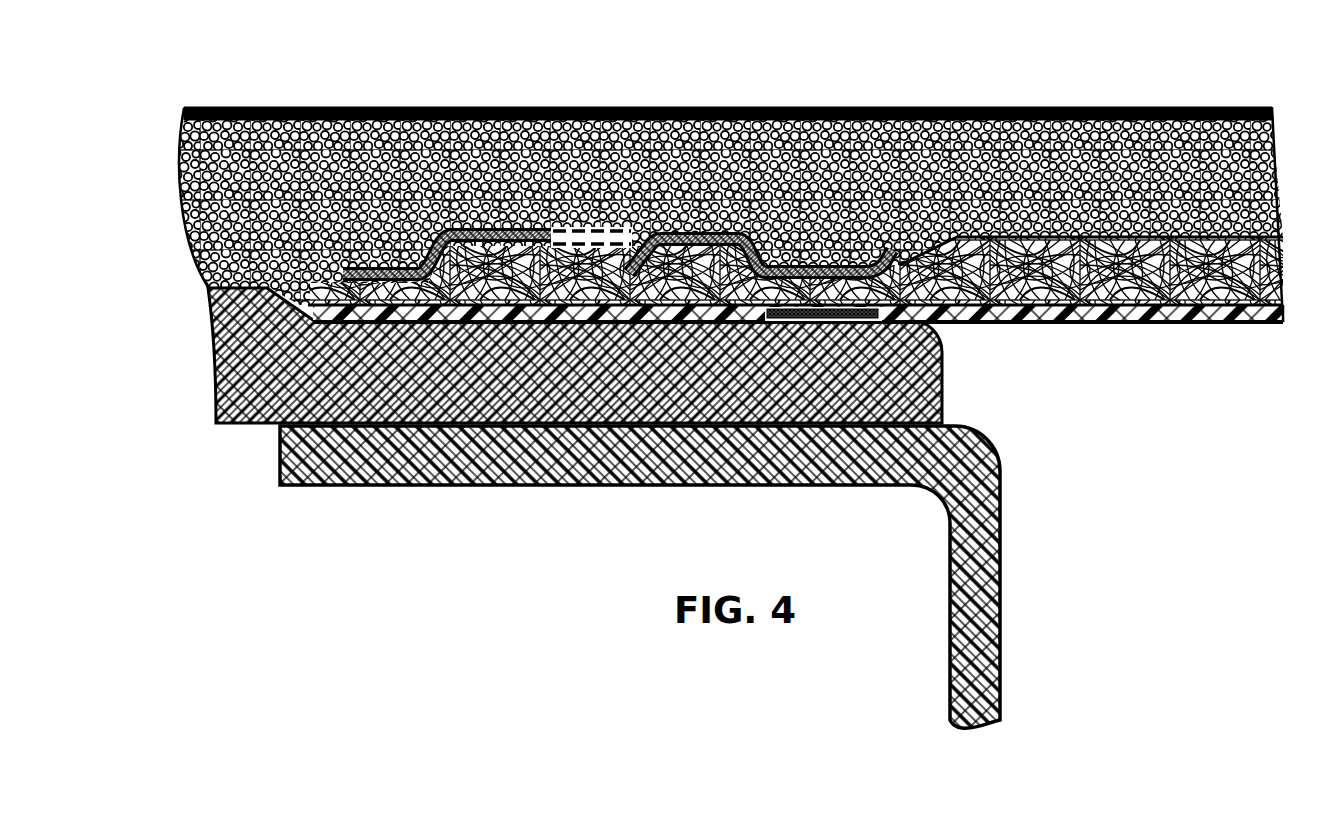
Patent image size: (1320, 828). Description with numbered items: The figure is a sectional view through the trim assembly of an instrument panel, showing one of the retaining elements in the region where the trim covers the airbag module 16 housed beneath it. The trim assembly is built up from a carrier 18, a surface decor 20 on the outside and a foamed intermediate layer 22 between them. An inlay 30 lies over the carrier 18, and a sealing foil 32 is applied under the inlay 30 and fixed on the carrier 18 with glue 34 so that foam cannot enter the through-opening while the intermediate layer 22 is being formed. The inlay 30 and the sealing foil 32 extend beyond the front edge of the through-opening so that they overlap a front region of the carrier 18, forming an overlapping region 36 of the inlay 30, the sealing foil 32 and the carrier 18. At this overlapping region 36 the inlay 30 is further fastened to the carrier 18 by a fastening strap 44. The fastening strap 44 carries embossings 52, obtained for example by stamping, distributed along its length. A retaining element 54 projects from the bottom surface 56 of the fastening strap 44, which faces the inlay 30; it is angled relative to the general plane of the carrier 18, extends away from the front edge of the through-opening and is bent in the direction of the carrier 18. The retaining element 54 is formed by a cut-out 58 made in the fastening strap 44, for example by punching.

The airbag module 16 is at (576, 468).
The carrier 18 is at (215, 335).
The surface decor 20 is at (240, 107).
The foamed intermediate layer 22 is at (198, 202).
The inlay 30 is at (1216, 311).
The sealing foil 32 is at (1153, 311).
The glue 34 is at (880, 328).
The overlapping region 36 is at (378, 168).
The fastening strap 44 is at (788, 195).
The embossing 52 is at (734, 231).
The retaining element 54 is at (633, 237).
The bottom surface 56 is at (470, 232).
The cut-out 58 is at (590, 229).